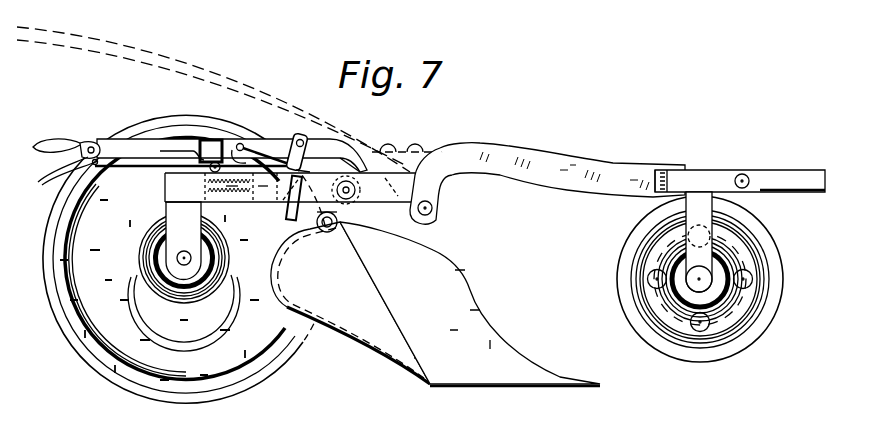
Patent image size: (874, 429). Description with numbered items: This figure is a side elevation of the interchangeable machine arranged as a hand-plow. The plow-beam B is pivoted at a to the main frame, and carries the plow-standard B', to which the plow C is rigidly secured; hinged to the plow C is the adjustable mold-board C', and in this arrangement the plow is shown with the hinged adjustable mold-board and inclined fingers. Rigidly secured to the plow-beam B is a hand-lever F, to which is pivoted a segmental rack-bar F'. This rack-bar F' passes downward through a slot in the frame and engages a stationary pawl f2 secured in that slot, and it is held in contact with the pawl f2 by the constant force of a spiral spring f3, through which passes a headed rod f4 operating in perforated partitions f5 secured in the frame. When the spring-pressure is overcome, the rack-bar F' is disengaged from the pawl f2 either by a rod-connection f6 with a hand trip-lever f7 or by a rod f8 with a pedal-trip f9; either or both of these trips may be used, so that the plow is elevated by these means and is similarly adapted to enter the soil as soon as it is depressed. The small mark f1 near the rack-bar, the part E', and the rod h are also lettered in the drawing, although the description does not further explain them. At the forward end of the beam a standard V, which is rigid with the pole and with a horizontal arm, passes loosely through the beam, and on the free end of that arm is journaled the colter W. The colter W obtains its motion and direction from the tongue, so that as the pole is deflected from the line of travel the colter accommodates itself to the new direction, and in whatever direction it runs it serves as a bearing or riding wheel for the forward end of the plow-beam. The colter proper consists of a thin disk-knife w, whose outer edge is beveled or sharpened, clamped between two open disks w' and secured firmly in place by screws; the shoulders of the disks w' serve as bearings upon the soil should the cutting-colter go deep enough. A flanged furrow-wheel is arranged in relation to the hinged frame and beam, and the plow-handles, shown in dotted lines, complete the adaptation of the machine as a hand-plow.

The mold-board C' is at (350, 303).
The plow C is at (470, 304).
The perforated partitions f5 is at (200, 180).
The spiral spring f3 is at (230, 192).
The headed rod f4 is at (263, 193).
The rod-connection f6 is at (130, 168).
The hand trip-lever f7 is at (60, 162).
The pedal-trip f9 is at (168, 150).
The rod f8 is at (250, 143).
The hand-lever F is at (284, 177).
The segmental rack-bar F' is at (304, 162).
The stationary pawl f2 is at (345, 162).
The pivot of plow-beam a is at (352, 190).
The lever pivot f1 is at (400, 188).
The standard pivot E' is at (335, 220).
The plow-standard B' is at (438, 192).
The plow-beam B is at (562, 165).
The rear rod h is at (740, 173).
The colter W is at (578, 262).
The open disks w' is at (700, 279).
The disk-knife w is at (729, 301).
The standard V is at (699, 242).